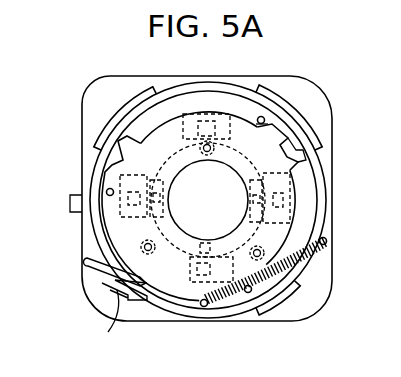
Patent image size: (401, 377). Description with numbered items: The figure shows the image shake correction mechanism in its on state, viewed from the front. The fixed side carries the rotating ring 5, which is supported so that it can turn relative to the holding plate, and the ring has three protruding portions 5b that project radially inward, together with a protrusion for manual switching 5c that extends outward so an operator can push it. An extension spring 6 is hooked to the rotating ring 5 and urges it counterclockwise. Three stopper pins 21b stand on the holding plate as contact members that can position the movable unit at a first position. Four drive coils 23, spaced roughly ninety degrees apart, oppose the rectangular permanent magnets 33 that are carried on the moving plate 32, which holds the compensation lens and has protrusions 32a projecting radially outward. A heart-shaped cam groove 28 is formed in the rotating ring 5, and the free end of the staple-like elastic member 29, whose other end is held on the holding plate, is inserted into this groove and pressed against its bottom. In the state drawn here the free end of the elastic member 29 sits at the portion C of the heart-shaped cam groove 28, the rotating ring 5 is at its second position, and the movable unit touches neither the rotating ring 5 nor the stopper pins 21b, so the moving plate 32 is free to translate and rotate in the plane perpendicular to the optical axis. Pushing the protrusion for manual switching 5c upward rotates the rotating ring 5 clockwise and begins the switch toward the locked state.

The rotating ring 5 is at (318, 193).
The protruding portions 5b is at (297, 152).
The protrusion for manual switching 5c is at (68, 197).
The extension spring 6 is at (297, 258).
The stopper pins 21b is at (265, 118).
The drive coils 23 is at (123, 135).
The heart-shaped cam groove 28 is at (102, 284).
The elastic member 29 is at (87, 265).
The moving plate 32 is at (150, 163).
The protrusions 32a is at (278, 128).
The permanent magnets 33 is at (115, 112).
The portion C is at (110, 321).